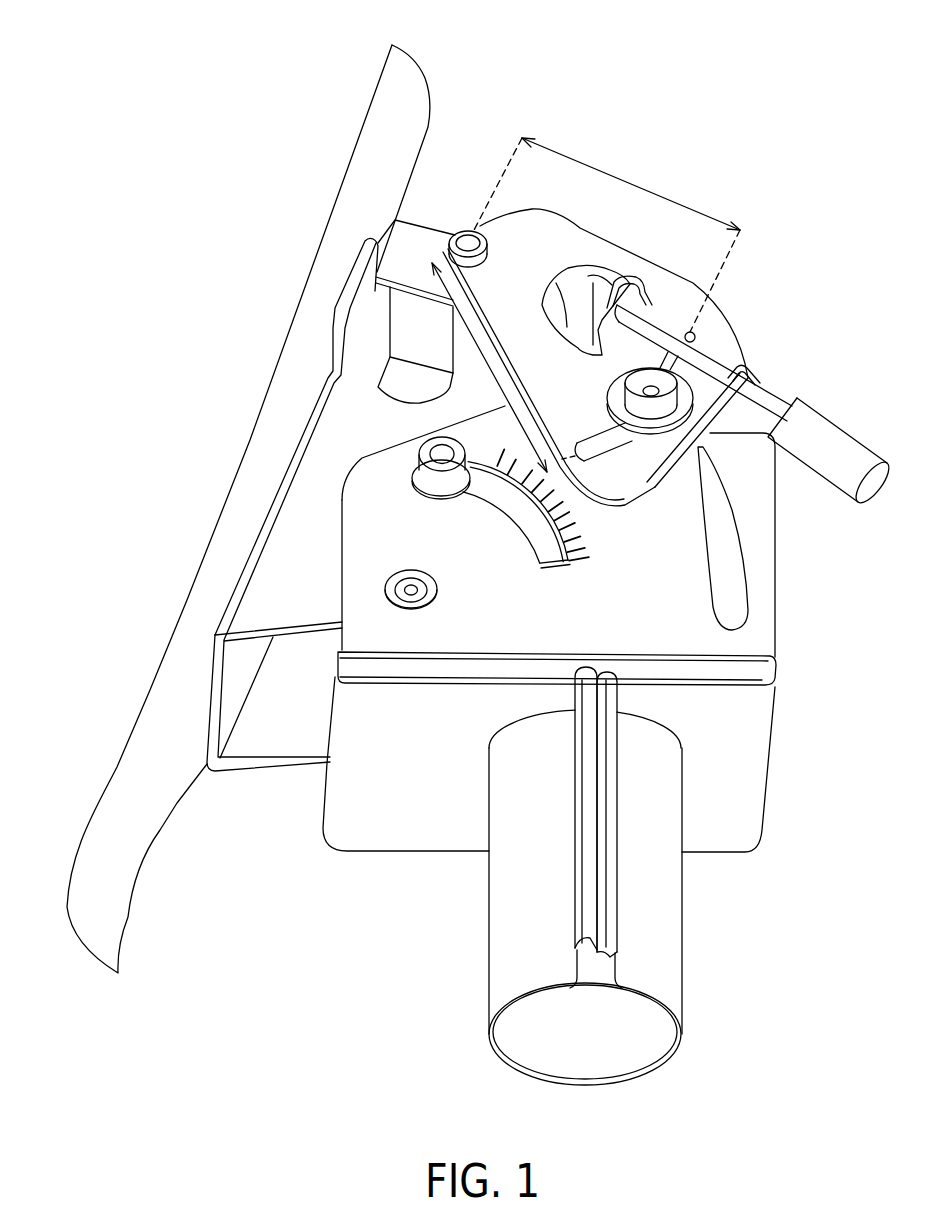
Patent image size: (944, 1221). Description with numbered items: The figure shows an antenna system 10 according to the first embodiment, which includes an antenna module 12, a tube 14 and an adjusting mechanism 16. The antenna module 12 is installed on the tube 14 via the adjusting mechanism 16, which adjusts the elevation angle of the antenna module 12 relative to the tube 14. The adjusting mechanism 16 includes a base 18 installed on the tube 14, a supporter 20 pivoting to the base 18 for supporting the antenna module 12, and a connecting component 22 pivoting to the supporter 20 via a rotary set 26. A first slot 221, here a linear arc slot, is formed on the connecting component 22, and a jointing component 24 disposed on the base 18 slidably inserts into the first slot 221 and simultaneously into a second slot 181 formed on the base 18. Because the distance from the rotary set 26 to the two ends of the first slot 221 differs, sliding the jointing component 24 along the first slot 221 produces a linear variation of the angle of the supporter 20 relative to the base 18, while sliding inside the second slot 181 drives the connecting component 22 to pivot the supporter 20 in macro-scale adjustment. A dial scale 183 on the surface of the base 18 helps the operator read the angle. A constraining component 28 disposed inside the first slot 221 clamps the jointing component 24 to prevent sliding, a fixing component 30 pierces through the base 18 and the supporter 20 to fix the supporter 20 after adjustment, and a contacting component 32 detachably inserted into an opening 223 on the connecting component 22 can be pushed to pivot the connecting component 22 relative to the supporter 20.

The antenna system 10 is at (716, 104).
The antenna module 12 is at (348, 193).
The tube 14 is at (650, 938).
The adjusting mechanism 16 is at (340, 895).
The base 18 is at (381, 633).
The second slot 181 is at (747, 578).
The dial scale 183 is at (603, 533).
The supporter 20 is at (273, 562).
The connecting component 22 is at (637, 477).
The first slot 221 is at (722, 309).
The opening 223 is at (755, 377).
The jointing component 24 is at (651, 390).
The rotary set 26 is at (473, 233).
The constraining component 28 is at (580, 437).
The fixing component 30 is at (412, 472).
The contacting component 32 is at (832, 440).